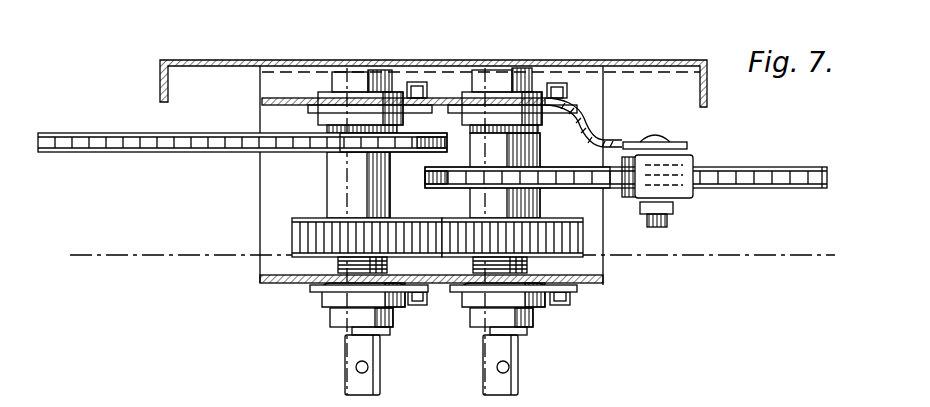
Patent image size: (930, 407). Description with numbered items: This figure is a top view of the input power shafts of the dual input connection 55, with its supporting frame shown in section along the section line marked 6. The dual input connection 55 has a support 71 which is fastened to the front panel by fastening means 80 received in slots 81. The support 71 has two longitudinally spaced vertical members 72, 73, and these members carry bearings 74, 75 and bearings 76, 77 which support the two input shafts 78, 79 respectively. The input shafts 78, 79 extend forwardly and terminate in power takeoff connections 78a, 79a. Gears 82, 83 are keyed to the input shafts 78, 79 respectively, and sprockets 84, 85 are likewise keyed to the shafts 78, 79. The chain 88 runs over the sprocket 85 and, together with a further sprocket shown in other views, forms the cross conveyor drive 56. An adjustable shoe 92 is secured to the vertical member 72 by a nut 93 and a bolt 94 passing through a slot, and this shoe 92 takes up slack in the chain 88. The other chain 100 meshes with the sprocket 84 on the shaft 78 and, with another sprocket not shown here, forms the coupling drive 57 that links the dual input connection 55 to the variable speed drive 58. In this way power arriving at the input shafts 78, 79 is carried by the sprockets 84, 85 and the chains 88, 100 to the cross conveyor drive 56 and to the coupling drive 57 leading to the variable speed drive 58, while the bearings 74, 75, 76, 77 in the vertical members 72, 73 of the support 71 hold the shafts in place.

The dual input connection 55 is at (232, 299).
The cross conveyor drive 56 is at (771, 202).
The coupling drive 57 is at (152, 190).
The variable speed drive 58 is at (446, 48).
The section line 6- 6 is at (63, 236).
The support 71 is at (232, 200).
The vertical member 72 is at (293, 97).
The vertical member 73 is at (292, 285).
The bearing 74 is at (317, 112).
The bearing 75 is at (335, 300).
The bearing 76 is at (578, 118).
The bearing 77 is at (548, 310).
The input shaft 78 is at (382, 333).
The power takeoff connection 78a is at (352, 385).
The input shaft 79 is at (522, 337).
The power takeoff connection 79a is at (495, 385).
The fastening means 80 is at (578, 406).
The slot 81 is at (626, 406).
The gear 82 is at (312, 218).
The gear 83 is at (587, 206).
The sprocket 84 is at (352, 145).
The sprocket 85 is at (533, 170).
The chain 88 is at (805, 148).
The adjustable shoe 92 is at (632, 205).
The nut 93 is at (675, 215).
The bolt 94 is at (660, 140).
The chain 100 is at (142, 148).